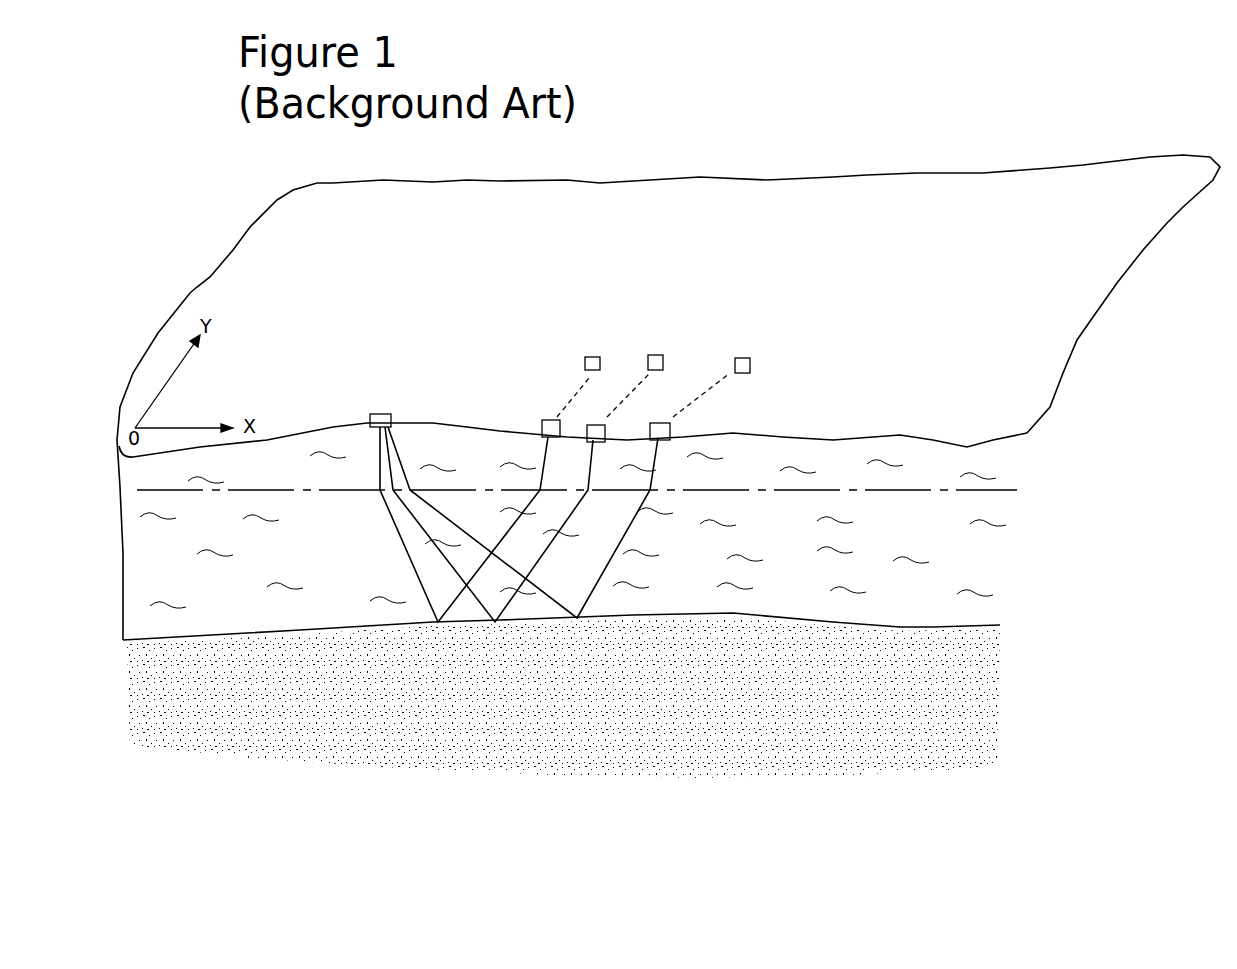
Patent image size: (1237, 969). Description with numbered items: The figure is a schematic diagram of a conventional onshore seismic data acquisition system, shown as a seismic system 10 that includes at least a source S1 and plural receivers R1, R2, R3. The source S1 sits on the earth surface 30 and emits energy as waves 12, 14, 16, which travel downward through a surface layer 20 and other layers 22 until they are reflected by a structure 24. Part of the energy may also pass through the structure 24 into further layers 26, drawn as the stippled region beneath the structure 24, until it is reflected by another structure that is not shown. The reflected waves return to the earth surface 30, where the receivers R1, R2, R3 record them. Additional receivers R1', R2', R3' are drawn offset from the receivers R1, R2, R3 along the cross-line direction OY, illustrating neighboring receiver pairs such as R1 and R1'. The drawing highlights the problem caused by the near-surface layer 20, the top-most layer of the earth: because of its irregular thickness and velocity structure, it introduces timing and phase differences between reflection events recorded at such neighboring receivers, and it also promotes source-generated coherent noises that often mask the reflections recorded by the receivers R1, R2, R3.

The seismic system 10 is at (683, 255).
The wave 12 is at (407, 550).
The wave 14 is at (410, 517).
The wave 16 is at (403, 472).
The surface layer 20 is at (922, 457).
The other layers 22 is at (983, 548).
The structure 24 is at (937, 627).
The further layers 26 is at (920, 687).
The earth surface 30 is at (830, 440).
The source S1 is at (383, 412).
The receiver R1 is at (556, 385).
The receiver R2 is at (623, 376).
The receiver R3 is at (708, 372).
The receiver R1' is at (582, 338).
The receiver R2' is at (670, 338).
The receiver R3' is at (769, 352).